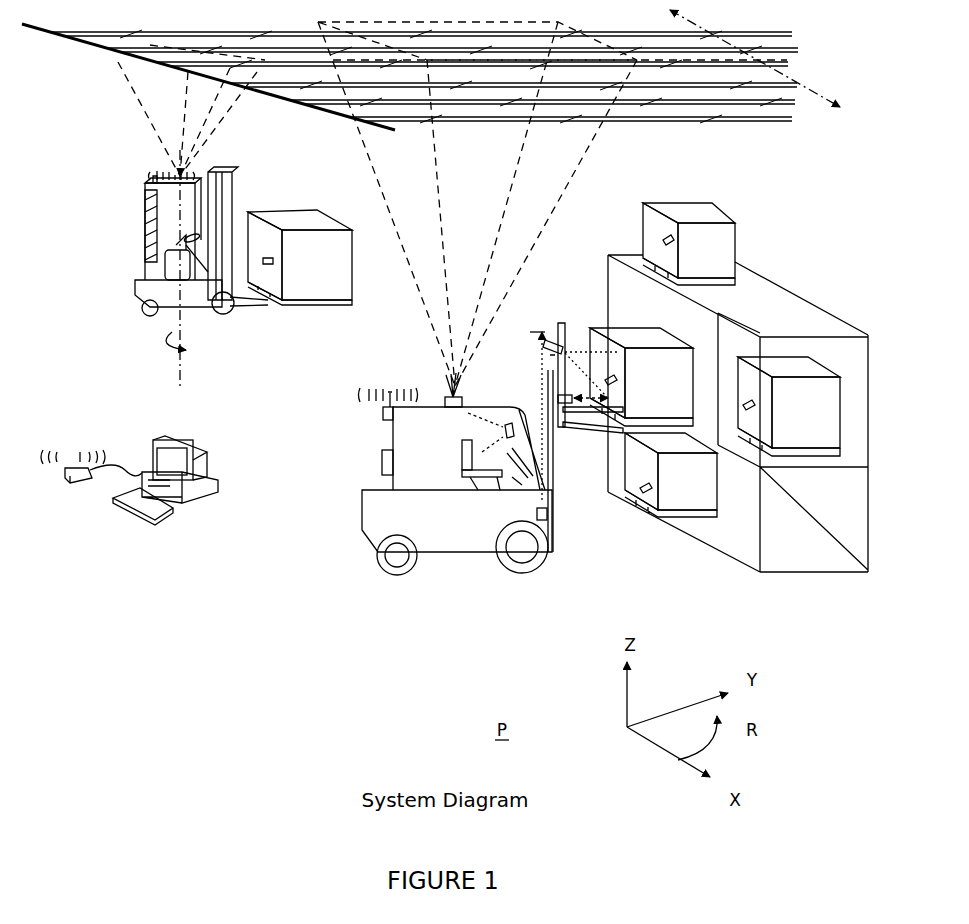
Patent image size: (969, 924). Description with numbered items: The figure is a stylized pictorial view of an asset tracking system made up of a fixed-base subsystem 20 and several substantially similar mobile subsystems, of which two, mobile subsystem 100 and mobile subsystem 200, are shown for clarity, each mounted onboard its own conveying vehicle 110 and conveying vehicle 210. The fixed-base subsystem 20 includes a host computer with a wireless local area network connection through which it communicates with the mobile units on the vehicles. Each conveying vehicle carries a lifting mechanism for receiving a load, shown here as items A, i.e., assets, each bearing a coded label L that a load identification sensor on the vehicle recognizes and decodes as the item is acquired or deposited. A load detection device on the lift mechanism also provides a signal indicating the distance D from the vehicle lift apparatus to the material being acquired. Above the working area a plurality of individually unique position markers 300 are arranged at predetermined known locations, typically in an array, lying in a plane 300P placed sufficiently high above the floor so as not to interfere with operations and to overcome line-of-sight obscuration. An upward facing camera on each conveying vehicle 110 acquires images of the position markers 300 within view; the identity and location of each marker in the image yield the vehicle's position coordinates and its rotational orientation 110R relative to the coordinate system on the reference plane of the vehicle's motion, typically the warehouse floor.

The fixed-base subsystem 20 is at (115, 523).
The mobile subsystem 100 is at (149, 270).
The conveying vehicle 110 is at (135, 290).
The rotational orientation of the conveying vehicle 110R is at (149, 270).
The mobile subsystem 200 is at (444, 452).
The conveying vehicle 210 is at (362, 516).
The position markers 300 is at (677, 87).
The plane of the position markers 300P is at (763, 73).
The item A is at (285, 212).
The coded label L is at (270, 265).
The distance D is at (580, 405).